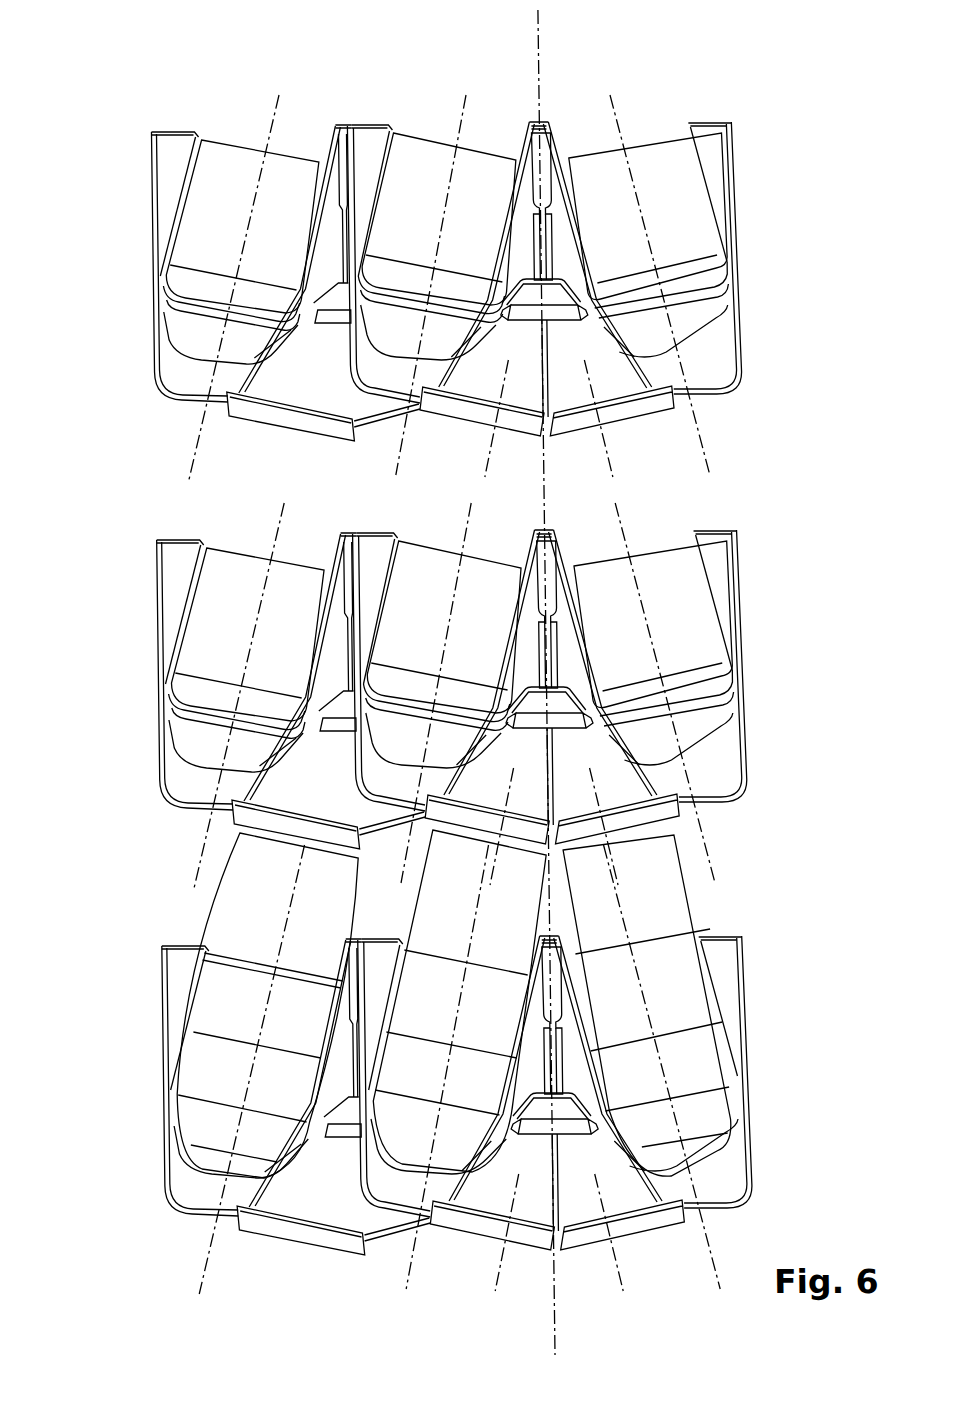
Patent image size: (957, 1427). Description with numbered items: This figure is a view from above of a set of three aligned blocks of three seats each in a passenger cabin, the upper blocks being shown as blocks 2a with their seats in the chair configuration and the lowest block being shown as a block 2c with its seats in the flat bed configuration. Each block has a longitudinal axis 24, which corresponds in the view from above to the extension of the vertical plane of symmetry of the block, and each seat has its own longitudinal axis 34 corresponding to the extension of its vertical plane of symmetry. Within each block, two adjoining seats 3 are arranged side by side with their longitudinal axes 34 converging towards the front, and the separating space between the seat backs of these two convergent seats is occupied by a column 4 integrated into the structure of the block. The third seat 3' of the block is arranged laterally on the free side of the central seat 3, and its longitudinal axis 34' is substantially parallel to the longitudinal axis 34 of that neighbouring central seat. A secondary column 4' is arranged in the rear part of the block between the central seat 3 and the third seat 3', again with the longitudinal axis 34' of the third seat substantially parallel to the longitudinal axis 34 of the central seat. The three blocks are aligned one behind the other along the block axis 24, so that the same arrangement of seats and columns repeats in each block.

The block in chair configuration 2a is at (105, 325).
The block in bed configuration 2c is at (112, 1088).
The seat 3 is at (575, 654).
The third seat 3' is at (235, 659).
The column 4 is at (604, 703).
The secondary column 4' is at (273, 705).
The longitudinal axis of the block 24 is at (550, 30).
The longitudinal axis of the seat 34 is at (556, 677).
The longitudinal axis of the third seat 34' is at (247, 680).